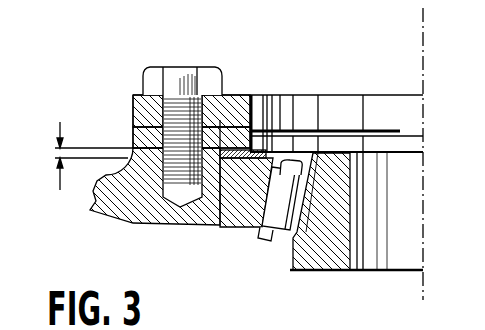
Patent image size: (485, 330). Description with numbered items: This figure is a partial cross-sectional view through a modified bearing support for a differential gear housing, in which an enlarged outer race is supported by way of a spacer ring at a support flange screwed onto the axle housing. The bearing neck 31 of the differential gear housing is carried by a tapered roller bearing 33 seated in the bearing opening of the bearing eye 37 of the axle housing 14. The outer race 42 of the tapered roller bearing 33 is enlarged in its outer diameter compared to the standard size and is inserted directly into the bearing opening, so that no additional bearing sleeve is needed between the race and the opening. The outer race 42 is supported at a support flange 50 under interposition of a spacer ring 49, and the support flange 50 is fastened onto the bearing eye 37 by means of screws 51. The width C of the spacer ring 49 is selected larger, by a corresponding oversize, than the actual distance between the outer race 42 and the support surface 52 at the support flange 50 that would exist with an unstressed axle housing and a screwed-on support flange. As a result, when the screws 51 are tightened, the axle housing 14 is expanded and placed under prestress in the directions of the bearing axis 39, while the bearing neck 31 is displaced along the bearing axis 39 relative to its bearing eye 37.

The axle housing 14 is at (106, 125).
The bearing neck 31 is at (323, 252).
The tapered roller bearing 33 is at (267, 258).
The bearing eye 37 is at (134, 212).
The bearing axis 39 is at (417, 43).
The outer race 42 is at (232, 212).
The spacer ring 49 is at (263, 158).
The support flange 50 is at (237, 113).
The screws 51 is at (180, 83).
The support surface 52 is at (370, 157).
The width of the spacer ring C is at (74, 156).